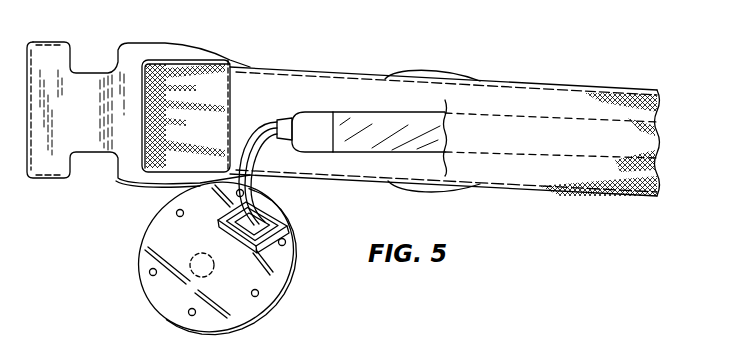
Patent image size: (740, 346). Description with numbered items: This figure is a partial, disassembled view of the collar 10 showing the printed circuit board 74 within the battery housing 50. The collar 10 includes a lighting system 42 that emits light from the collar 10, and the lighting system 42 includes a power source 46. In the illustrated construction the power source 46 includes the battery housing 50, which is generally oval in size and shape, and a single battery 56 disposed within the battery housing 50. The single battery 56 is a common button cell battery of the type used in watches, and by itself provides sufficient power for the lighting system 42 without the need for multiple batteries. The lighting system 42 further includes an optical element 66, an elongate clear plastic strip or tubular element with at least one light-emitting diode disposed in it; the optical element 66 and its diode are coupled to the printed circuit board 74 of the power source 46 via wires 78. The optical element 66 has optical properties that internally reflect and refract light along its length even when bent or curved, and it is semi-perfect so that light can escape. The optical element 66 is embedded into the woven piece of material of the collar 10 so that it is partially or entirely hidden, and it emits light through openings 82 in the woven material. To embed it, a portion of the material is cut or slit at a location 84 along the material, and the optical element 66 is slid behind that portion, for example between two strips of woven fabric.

The collar 10 is at (506, 34).
The openings 82 is at (643, 130).
The location 84 is at (445, 103).
The optical element 66 is at (313, 128).
The wires 78 is at (257, 152).
The lighting system 42 is at (117, 266).
The battery housing 50 is at (162, 292).
The power source 46 is at (265, 277).
The single battery 56 is at (195, 260).
The printed circuit board 74 is at (267, 237).